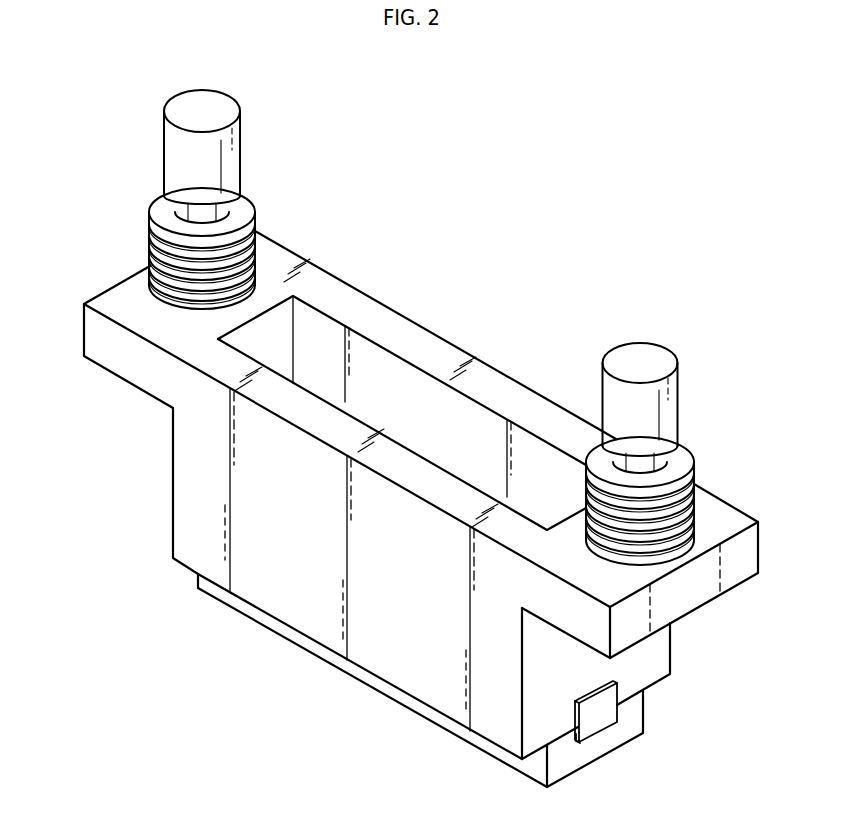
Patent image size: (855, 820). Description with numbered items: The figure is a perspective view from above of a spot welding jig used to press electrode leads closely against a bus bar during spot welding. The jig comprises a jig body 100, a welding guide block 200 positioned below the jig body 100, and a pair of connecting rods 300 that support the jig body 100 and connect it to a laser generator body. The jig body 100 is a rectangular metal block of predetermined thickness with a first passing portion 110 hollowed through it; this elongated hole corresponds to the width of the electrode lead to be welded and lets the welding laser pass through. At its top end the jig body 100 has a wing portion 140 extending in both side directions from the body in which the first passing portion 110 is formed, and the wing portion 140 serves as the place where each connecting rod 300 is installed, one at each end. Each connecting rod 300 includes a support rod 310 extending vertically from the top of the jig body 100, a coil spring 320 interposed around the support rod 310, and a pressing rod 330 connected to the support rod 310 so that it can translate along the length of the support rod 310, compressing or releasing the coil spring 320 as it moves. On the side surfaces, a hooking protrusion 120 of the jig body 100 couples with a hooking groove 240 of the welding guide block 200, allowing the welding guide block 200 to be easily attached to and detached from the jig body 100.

The jig body 100 is at (170, 482).
The first passing portion 110 is at (387, 408).
The hooking protrusion 120 is at (604, 703).
The wing portion 140 is at (112, 296).
The welding guide block 200 is at (237, 609).
The hooking groove 240 is at (580, 741).
The connecting rod 300 is at (257, 114).
The support rod 310 is at (642, 467).
The coil spring 320 is at (680, 495).
The pressing rod 330 is at (675, 407).